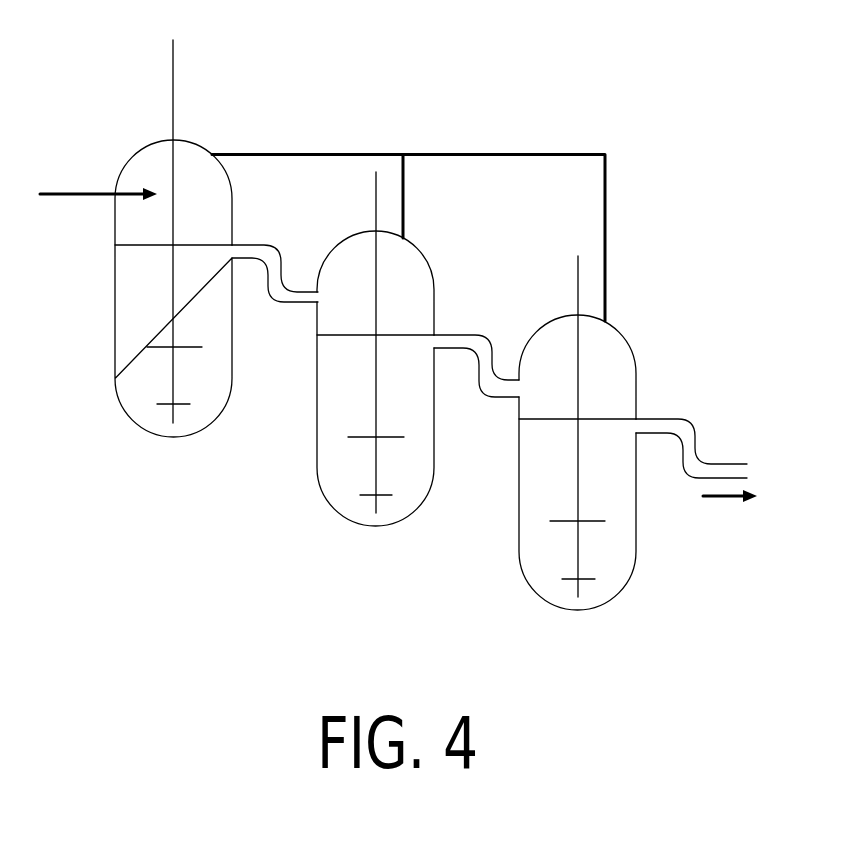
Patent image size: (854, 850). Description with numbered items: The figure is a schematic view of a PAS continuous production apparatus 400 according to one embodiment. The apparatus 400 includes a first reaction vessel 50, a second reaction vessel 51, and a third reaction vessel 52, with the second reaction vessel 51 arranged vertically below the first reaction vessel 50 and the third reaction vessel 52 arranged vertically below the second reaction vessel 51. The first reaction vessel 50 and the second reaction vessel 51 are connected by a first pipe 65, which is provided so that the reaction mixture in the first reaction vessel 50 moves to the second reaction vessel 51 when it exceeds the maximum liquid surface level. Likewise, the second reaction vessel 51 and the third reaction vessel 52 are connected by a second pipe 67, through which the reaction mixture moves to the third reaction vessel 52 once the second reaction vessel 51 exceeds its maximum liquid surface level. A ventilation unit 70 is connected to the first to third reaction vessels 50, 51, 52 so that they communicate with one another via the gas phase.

The PAS continuous production apparatus 400 is at (662, 63).
The first reaction vessel 50 is at (130, 160).
The second reaction vessel 51 is at (334, 247).
The third reaction vessel 52 is at (539, 331).
The first pipe 65 is at (290, 290).
The second pipe 67 is at (490, 388).
The ventilation unit 70 is at (288, 153).